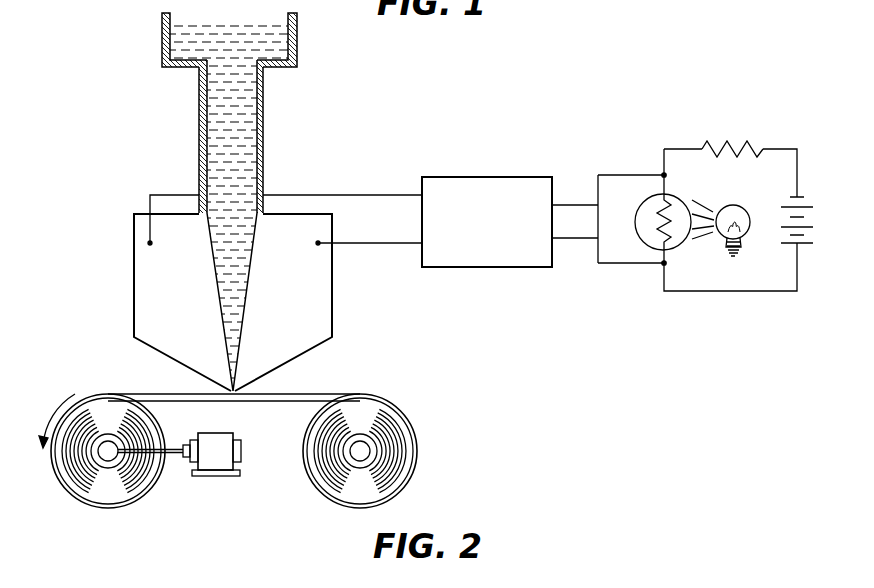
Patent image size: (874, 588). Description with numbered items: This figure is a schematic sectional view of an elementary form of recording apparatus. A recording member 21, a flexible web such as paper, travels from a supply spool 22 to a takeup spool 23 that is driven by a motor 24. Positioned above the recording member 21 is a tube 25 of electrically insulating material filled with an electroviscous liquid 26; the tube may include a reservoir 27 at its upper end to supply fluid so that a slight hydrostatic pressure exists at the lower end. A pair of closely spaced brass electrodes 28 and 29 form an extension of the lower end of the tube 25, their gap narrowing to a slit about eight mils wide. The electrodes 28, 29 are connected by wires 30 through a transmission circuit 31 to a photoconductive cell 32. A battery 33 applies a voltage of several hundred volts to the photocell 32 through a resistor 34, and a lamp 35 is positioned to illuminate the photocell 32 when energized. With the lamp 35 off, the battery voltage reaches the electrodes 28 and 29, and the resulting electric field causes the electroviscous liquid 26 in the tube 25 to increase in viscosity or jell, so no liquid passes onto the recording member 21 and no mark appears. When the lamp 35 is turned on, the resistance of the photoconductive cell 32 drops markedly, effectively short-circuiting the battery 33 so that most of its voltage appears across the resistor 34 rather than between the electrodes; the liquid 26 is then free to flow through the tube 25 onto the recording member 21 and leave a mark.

The recording member 21 is at (183, 393).
The supply spool 22 is at (418, 469).
The takeup spool 23 is at (56, 477).
The motor 24 is at (241, 461).
The tube 25 is at (264, 134).
The electroviscous liquid 26 is at (240, 0).
The reservoir 27 is at (298, 35).
The brass electrode 28 is at (133, 305).
The brass electrode 29 is at (334, 306).
The wires 30 is at (338, 194).
The transmission circuit 31 is at (465, 177).
The photoconductive cell 32 is at (697, 205).
The battery 33 is at (803, 205).
The resistor 34 is at (727, 143).
The lamp 35 is at (735, 205).